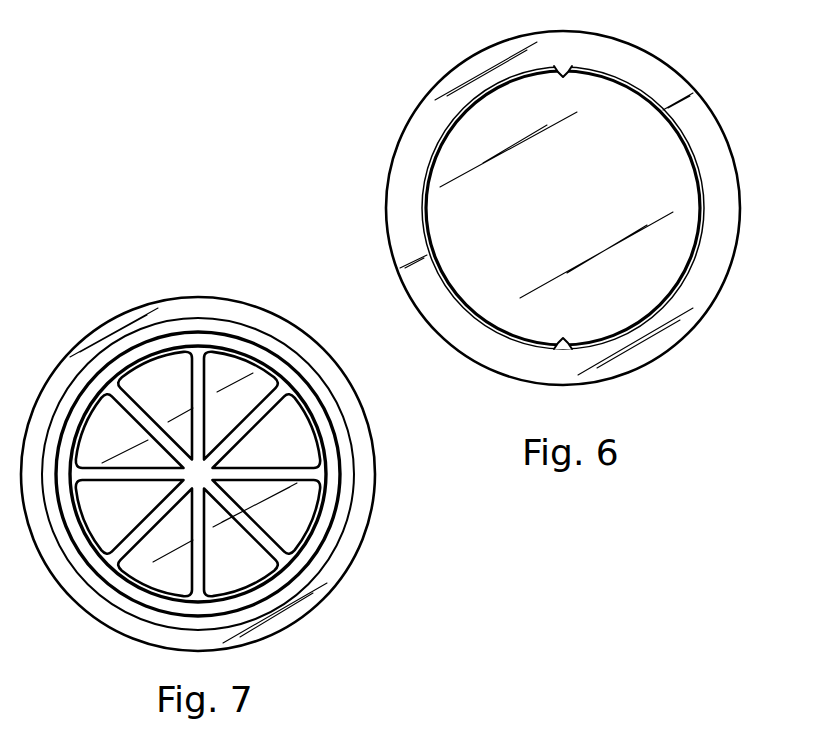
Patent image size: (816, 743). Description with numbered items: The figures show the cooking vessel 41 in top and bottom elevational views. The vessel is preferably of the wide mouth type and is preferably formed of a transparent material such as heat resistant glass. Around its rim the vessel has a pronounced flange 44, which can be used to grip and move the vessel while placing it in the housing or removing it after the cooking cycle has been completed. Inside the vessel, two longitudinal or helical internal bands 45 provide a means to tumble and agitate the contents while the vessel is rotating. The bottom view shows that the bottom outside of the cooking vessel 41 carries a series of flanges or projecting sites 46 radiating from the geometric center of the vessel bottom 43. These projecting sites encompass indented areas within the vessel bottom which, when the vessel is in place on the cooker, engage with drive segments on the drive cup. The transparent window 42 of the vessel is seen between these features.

In FIG. 6, the cooking vessel 41 is at (680, 278).
In FIG. 7, the cooking vessel 41 is at (342, 453).
In FIG. 6, the transparent window 42 is at (470, 133).
In FIG. 7, the vessel bottom 43 is at (190, 336).
In FIG. 6, the flange 44 is at (662, 78).
In FIG. 7, the flange 44 is at (357, 512).
In FIG. 6, the internal bands 45 is at (563, 64).
In FIG. 7, the projecting sites 46 is at (197, 371).